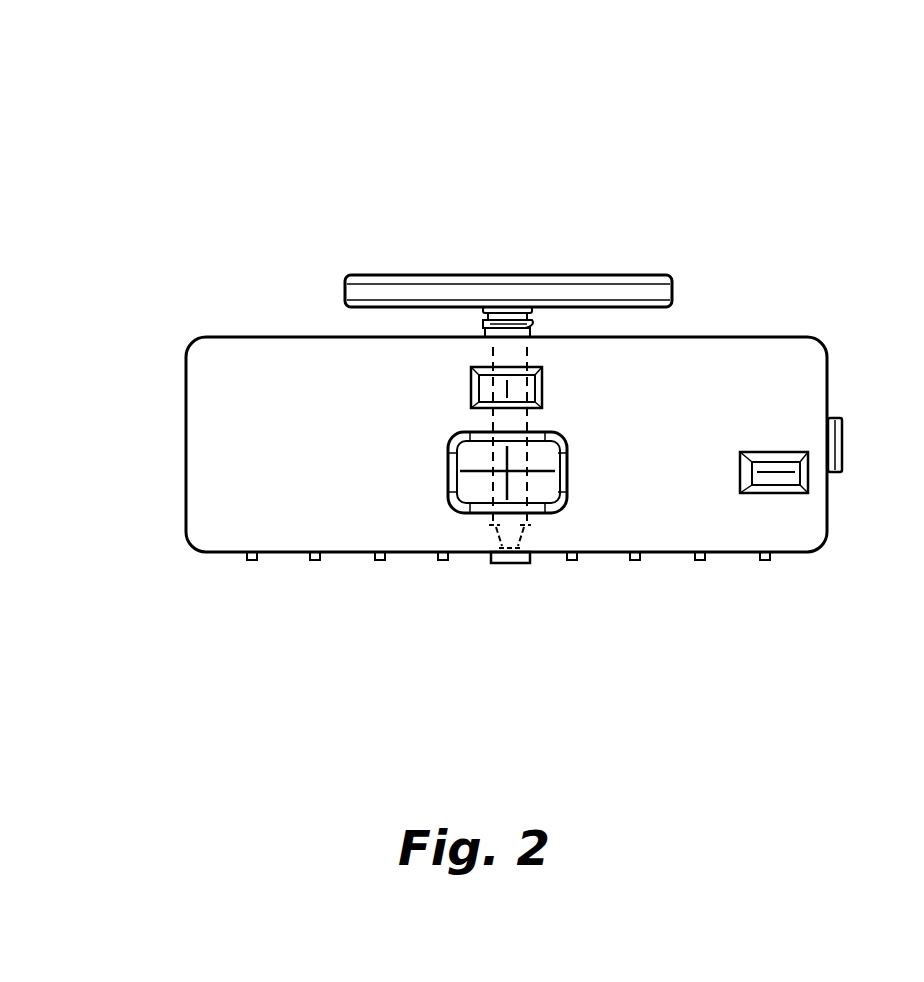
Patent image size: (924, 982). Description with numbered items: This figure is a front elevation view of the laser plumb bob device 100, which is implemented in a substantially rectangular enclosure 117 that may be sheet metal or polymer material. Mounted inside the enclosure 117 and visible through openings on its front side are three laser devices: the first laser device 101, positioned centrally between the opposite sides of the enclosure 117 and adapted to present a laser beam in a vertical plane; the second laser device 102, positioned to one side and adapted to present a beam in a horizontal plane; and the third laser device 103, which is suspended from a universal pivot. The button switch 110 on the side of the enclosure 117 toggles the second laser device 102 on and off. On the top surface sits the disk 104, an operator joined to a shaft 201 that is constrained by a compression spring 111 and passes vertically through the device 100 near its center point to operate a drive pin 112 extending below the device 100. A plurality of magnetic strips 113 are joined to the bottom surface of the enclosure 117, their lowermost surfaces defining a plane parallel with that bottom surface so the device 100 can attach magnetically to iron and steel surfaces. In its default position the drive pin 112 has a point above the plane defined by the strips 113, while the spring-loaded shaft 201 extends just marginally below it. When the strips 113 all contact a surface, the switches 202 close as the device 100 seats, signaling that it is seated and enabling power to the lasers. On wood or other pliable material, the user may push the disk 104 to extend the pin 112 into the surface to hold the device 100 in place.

The laser plumb bob device 100 is at (525, 130).
The first laser device 101 is at (469, 392).
The second laser device 102 is at (771, 450).
The third laser device 103 is at (571, 458).
The disk 104 is at (395, 275).
The button switch 110 is at (843, 437).
The compression spring 111 is at (536, 322).
The drive pin 112 is at (510, 545).
The magnetic strips 113 is at (316, 563).
The enclosure 117 is at (186, 415).
The shaft 201 is at (495, 357).
The switches 202 is at (507, 564).